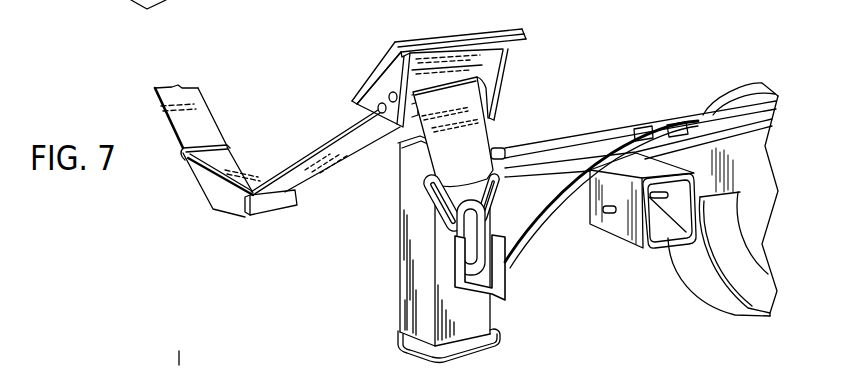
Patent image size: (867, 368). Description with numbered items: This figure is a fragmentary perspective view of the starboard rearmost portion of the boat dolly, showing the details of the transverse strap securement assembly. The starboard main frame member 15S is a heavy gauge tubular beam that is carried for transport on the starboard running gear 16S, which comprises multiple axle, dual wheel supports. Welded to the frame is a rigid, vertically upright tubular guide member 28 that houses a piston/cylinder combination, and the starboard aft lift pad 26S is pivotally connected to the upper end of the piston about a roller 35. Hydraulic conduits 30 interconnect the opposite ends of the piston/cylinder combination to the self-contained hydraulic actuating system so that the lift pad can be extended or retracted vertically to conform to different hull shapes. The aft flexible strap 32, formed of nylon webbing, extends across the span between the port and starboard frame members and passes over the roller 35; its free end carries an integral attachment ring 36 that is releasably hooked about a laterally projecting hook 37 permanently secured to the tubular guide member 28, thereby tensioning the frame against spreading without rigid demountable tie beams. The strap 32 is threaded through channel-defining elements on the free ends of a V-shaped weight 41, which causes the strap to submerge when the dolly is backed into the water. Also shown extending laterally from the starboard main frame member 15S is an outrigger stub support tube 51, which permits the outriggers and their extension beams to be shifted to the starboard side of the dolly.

The starboard aft lift pad 26S is at (402, 30).
The aft flexible strap 32 is at (208, 133).
The V-shaped weight 41 is at (204, 192).
The roller 35 is at (488, 80).
The hydraulic conduit 30 is at (567, 141).
The attachment ring 36 is at (438, 198).
The tubular guide member 28 is at (408, 235).
The starboard main frame member 15S is at (547, 225).
The outrigger stub support tube 51 is at (615, 232).
The hook 37 is at (490, 288).
The starboard running gear 16S is at (683, 288).